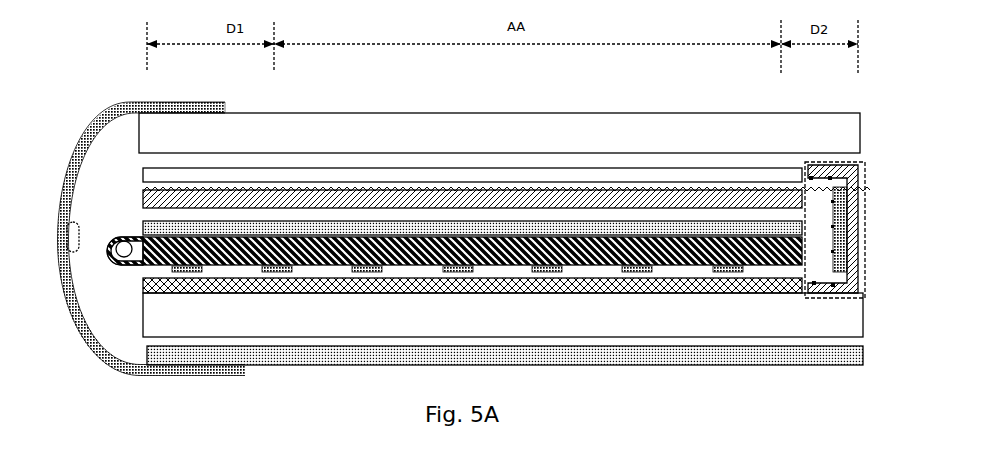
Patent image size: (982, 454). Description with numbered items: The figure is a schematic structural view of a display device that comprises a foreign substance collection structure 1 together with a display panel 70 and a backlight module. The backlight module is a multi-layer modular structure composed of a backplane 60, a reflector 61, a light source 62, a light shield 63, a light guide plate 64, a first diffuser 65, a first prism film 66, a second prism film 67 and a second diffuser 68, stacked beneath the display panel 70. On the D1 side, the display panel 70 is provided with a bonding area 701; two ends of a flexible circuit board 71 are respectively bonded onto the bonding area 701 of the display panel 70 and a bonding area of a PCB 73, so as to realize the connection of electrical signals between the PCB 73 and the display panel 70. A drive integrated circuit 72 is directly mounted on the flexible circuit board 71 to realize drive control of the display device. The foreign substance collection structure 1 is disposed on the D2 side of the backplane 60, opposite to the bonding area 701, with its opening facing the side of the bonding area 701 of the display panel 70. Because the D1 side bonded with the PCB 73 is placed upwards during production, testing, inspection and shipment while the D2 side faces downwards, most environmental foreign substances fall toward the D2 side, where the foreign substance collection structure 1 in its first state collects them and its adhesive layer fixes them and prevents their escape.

The foreign substance collection structure 1 is at (868, 178).
The backplane 60 is at (415, 318).
The reflector 61 is at (455, 271).
The light source 62 is at (123, 252).
The light shield 63 is at (136, 266).
The light guide plate 64 is at (507, 248).
The first diffuser 65 is at (555, 235).
The first prism film 66 is at (440, 215).
The second prism film 67 is at (486, 200).
The second diffuser 68 is at (576, 176).
The display panel 70 is at (317, 113).
The bonding area 701 is at (213, 105).
The flexible circuit board 71 is at (142, 112).
The drive integrated circuit 72 is at (73, 233).
The PCB 73 is at (330, 350).